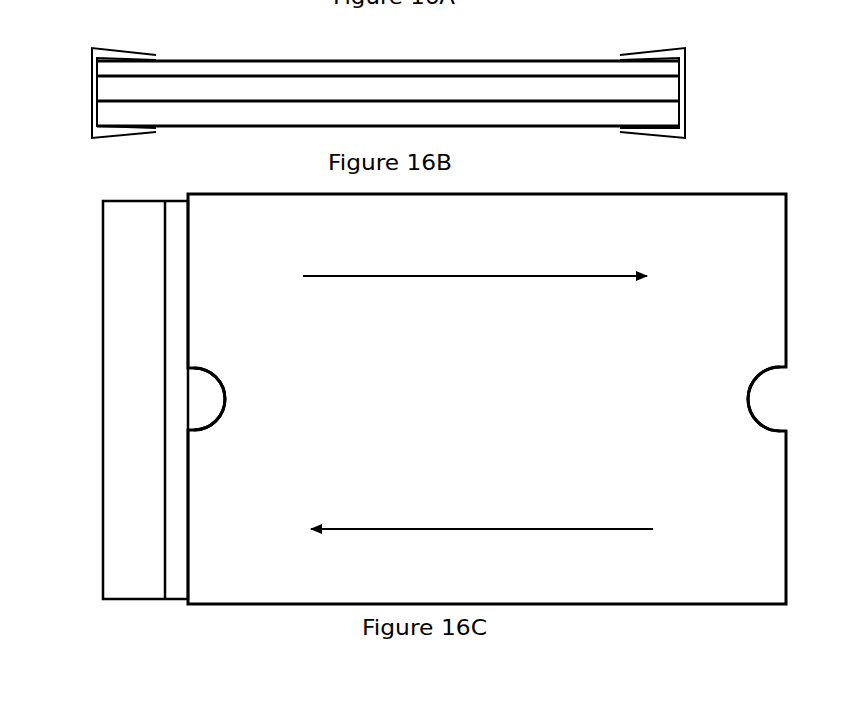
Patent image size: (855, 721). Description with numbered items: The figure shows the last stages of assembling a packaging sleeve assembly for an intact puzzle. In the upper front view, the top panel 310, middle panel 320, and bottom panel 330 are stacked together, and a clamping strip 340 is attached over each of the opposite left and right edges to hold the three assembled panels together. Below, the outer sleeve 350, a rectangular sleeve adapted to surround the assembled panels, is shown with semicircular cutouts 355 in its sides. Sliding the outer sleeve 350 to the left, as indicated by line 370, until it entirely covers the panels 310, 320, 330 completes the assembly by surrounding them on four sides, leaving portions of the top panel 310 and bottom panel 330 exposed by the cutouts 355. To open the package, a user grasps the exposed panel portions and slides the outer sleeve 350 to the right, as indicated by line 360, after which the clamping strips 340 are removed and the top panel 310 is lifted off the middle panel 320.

In FIG. 16B, the top panel 310 is at (302, 70).
In FIG. 16C, the top panel 310 is at (209, 405).
In FIG. 16B, the middle panel 320 is at (358, 95).
In FIG. 16B, the bottom panel 330 is at (277, 115).
In FIG. 16B, the clamping strip 340 is at (112, 53).
In FIG. 16C, the clamping strip 340 is at (128, 255).
In FIG. 16C, the outer sleeve 350 is at (506, 410).
In FIG. 16C, the semicircular cutouts 355 is at (197, 380).
In FIG. 16C, the line indicating sliding to the right 360 is at (387, 279).
In FIG. 16C, the line indicating sliding to the left 370 is at (550, 527).